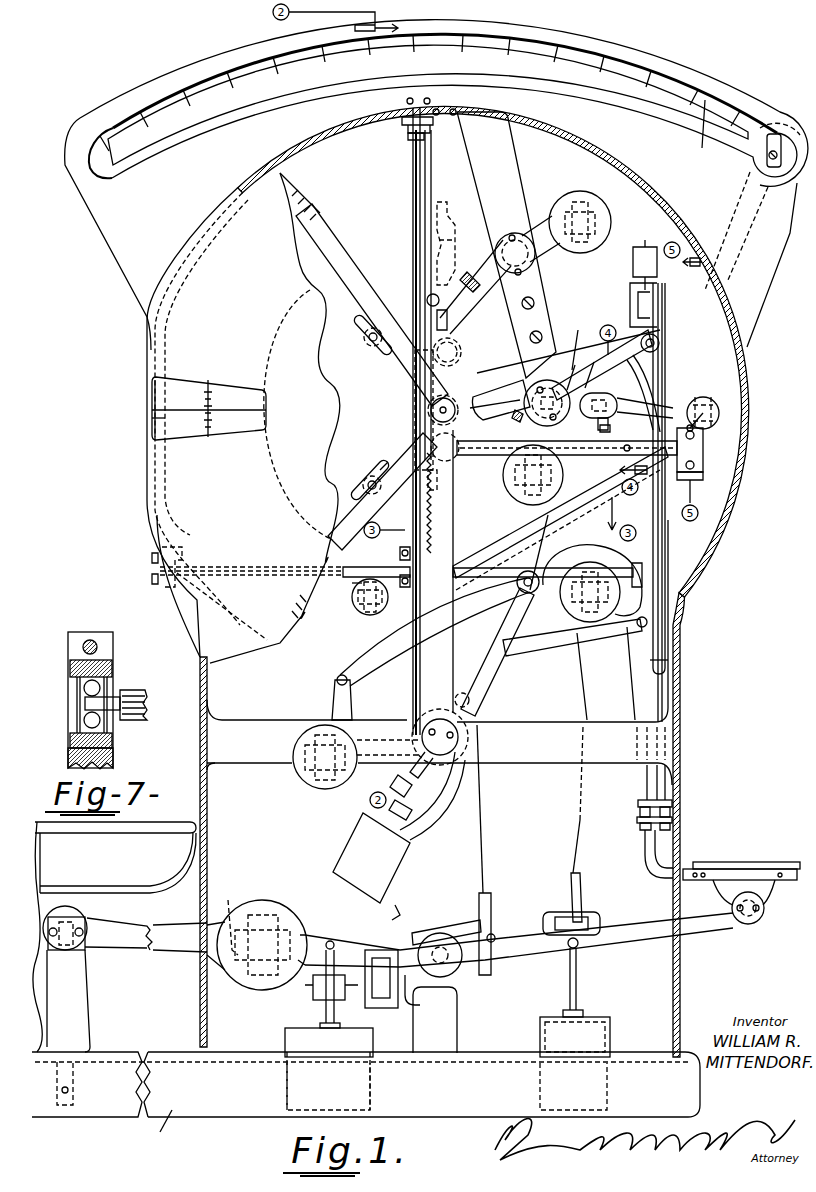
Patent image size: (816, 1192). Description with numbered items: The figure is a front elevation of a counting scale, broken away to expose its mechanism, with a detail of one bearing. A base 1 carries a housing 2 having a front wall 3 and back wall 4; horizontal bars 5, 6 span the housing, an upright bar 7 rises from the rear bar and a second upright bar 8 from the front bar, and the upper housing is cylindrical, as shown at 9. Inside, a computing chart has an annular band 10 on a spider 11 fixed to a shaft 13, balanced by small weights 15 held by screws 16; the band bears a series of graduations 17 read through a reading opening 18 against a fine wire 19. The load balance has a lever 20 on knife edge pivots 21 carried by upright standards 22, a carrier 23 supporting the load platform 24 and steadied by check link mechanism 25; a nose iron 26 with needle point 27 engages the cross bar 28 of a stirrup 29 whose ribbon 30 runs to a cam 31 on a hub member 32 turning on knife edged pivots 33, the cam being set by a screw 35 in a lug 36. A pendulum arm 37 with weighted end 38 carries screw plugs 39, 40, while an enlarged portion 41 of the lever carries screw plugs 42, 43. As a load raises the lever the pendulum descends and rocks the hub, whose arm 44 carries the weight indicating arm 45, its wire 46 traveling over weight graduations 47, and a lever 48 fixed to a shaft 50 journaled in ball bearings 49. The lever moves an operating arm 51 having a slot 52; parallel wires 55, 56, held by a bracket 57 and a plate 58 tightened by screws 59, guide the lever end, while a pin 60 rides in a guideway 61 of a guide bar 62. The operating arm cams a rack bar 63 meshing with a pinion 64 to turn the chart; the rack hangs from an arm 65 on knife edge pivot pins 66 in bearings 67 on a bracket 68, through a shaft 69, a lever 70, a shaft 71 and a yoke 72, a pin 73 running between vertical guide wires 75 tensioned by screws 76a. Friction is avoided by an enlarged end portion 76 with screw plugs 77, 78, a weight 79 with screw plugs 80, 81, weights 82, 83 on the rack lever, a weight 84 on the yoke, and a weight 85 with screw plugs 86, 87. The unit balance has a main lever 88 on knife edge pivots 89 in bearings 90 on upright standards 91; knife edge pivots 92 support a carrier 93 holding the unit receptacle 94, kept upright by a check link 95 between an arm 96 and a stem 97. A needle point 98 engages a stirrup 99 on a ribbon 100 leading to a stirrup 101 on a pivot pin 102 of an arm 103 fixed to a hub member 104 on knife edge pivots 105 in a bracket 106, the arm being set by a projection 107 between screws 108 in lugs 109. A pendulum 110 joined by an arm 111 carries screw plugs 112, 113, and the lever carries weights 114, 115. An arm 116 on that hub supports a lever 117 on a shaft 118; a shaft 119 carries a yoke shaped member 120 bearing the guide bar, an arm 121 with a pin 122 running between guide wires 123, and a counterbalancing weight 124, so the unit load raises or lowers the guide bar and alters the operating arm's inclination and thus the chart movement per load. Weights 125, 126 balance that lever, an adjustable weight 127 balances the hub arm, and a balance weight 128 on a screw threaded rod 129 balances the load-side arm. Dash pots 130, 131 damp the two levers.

In FIG. 1, the base 1 is at (166, 1128).
In FIG. 1, the housing 2 is at (680, 968).
In FIG. 1, the front wall 3 is at (175, 343).
In FIG. 1, the back wall 4 is at (215, 683).
In FIG. 1, the horizontal bar 5 is at (258, 762).
In FIG. 1, the horizontal bar 6 is at (230, 725).
In FIG. 1, the upright bar 7 is at (607, 723).
In FIG. 1, the upright bar 8 is at (429, 416).
In FIG. 1, the cylindrical upper portion 9 is at (705, 448).
In FIG. 1, the annular band 10 is at (172, 393).
In FIG. 1, the spider 11 is at (345, 493).
In FIG. 1, the shaft 13 is at (432, 420).
In FIG. 1, the small weights 15 is at (378, 470).
In FIG. 1, the screws 16 is at (370, 480).
In FIG. 1, the series of graduations 17 is at (209, 381).
In FIG. 1, the reading opening 18 is at (153, 418).
In FIG. 1, the fine wire 19 is at (264, 410).
In FIG. 1, the lever 20 is at (138, 945).
In FIG. 1, the knife edge pivots 21 is at (92, 918).
In FIG. 1, the upright standards 22 is at (70, 1012).
In FIG. 1, the carrier 23 is at (55, 888).
In FIG. 1, the load platform 24 is at (162, 848).
In FIG. 1, the check link mechanism 25 is at (62, 1107).
In FIG. 1, the nose iron 26 is at (470, 925).
In FIG. 1, the needle point 27 is at (494, 935).
In FIG. 1, the cross bar 28 is at (490, 975).
In FIG. 1, the stirrup 29 is at (492, 905).
In FIG. 1, the flexible ribbon 30 is at (484, 845).
In FIG. 1, the cam 31 is at (433, 805).
In FIG. 1, the hub member 32 is at (470, 738).
In FIG. 1, the knife edged pivots 33 is at (470, 705).
In FIG. 1, the screw 35 is at (430, 768).
In FIG. 1, the lug 36 is at (396, 784).
In FIG. 1, the pendulum arm 37 is at (385, 738).
In FIG. 1, the pendulum weight 38 is at (322, 786).
In FIG. 1, the screw plug 39 is at (306, 748).
In FIG. 1, the screw plug 40 is at (305, 777).
In FIG. 1, the enlarged portion 41 is at (240, 975).
In FIG. 1, the screw plug 42 is at (272, 903).
In FIG. 1, the screw plug 43 is at (228, 916).
In FIG. 1, the arm 44 is at (478, 680).
In FIG. 1, the weight indicating arm 45 is at (732, 257).
In FIG. 1, the indicating wire 46 is at (780, 150).
In FIG. 1, the weight graduations 47 is at (696, 135).
In FIG. 1, the lever 48 is at (480, 598).
In FIG. 7, the ball bearings 49 is at (110, 681).
In FIG. 7, the shaft 50 is at (122, 715).
In FIG. 1, the operating arm 51 is at (560, 512).
In FIG. 1, the longitudinal slot 52 is at (558, 530).
In FIG. 1, the wire 55 is at (290, 568).
In FIG. 1, the wire 56 is at (284, 568).
In FIG. 1, the bracket 57 is at (595, 580).
In FIG. 1, the plate 58 is at (214, 593).
In FIG. 1, the screws 59 is at (151, 570).
In FIG. 1, the pin 60 is at (635, 437).
In FIG. 1, the guideway 61 is at (699, 450).
In FIG. 1, the guide bar 62 is at (692, 440).
In FIG. 1, the rack bar 63 is at (430, 497).
In FIG. 1, the pinion 64 is at (452, 367).
In FIG. 1, the arm 65 is at (493, 252).
In FIG. 1, the knife edge pivot pins 66 is at (528, 222).
In FIG. 1, the bearings 67 is at (535, 300).
In FIG. 1, the bracket 68 is at (543, 330).
In FIG. 1, the shaft 69 is at (427, 296).
In FIG. 1, the lever 70 is at (449, 318).
In FIG. 1, the shaft 71 is at (432, 408).
In FIG. 1, the yoke 72 is at (424, 378).
In FIG. 1, the pin 73 is at (386, 565).
In FIG. 1, the vertical guide wires 75 is at (412, 182).
In FIG. 1, the enlarged end portion 76 is at (590, 592).
In FIG. 1, the screws 76a is at (410, 133).
In FIG. 1, the screw plug 77 is at (528, 601).
In FIG. 1, the screw plug 78 is at (555, 622).
In FIG. 1, the weight 79 is at (366, 616).
In FIG. 1, the screw plug 80 is at (376, 612).
In FIG. 1, the screw plug 81 is at (356, 605).
In FIG. 1, the weight 82 is at (450, 218).
In FIG. 1, the weight 83 is at (450, 245).
In FIG. 1, the weight 84 is at (440, 300).
In FIG. 1, the weight 85 is at (604, 221).
In FIG. 1, the screw plug 86 is at (602, 205).
In FIG. 1, the screw plug 87 is at (574, 192).
In FIG. 1, the main lever 88 is at (627, 935).
In FIG. 1, the knife edge pivots 89 is at (440, 932).
In FIG. 1, the bearings 90 is at (440, 978).
In FIG. 1, the upright standards 91 is at (458, 1020).
In FIG. 1, the knife edge pivots 92 is at (748, 922).
In FIG. 1, the carrier 93 is at (766, 895).
In FIG. 1, the unit receptacle 94 is at (735, 862).
In FIG. 1, the check link 95 is at (530, 645).
In FIG. 1, the arm 96 is at (347, 700).
In FIG. 1, the stem 97 is at (645, 853).
In FIG. 1, the needle point 98 is at (570, 900).
In FIG. 1, the stirrup 99 is at (584, 898).
In FIG. 1, the flexible ribbon 100 is at (605, 505).
In FIG. 1, the stirrup 101 is at (613, 430).
In FIG. 1, the pivot pin 102 is at (640, 405).
In FIG. 1, the arm 103 is at (605, 395).
In FIG. 1, the hub member 104 is at (524, 397).
In FIG. 1, the knife edge pivots 105 is at (588, 365).
In FIG. 1, the bracket 106 is at (545, 372).
In FIG. 1, the projection 107 is at (594, 366).
In FIG. 1, the screws 108 is at (569, 369).
In FIG. 1, the lugs 109 is at (589, 429).
In FIG. 1, the pendulum 110 is at (518, 492).
In FIG. 1, the arm 111 is at (501, 410).
In FIG. 1, the screw plug 112 is at (532, 552).
In FIG. 1, the screw plug 113 is at (505, 480).
In FIG. 1, the weight 114 is at (318, 1000).
In FIG. 1, the weight 115 is at (370, 1000).
In FIG. 1, the arm 116 is at (578, 348).
In FIG. 1, the lever 117 is at (662, 370).
In FIG. 1, the shaft 118 is at (660, 340).
In FIG. 1, the shaft 119 is at (690, 470).
In FIG. 1, the yoke shaped member 120 is at (720, 420).
In FIG. 1, the arm 121 is at (671, 541).
In FIG. 1, the pin 122 is at (668, 658).
In FIG. 1, the guide wires 123 is at (663, 685).
In FIG. 1, the counterbalancing weight 124 is at (717, 404).
In FIG. 1, the weight 125 is at (655, 265).
In FIG. 1, the weight 126 is at (640, 295).
In FIG. 1, the adjustable weight 127 is at (495, 409).
In FIG. 1, the balance weight 128 is at (390, 860).
In FIG. 1, the screw threaded rod 129 is at (402, 818).
In FIG. 1, the dash pot 130 is at (290, 1035).
In FIG. 1, the dash pot 131 is at (538, 1035).